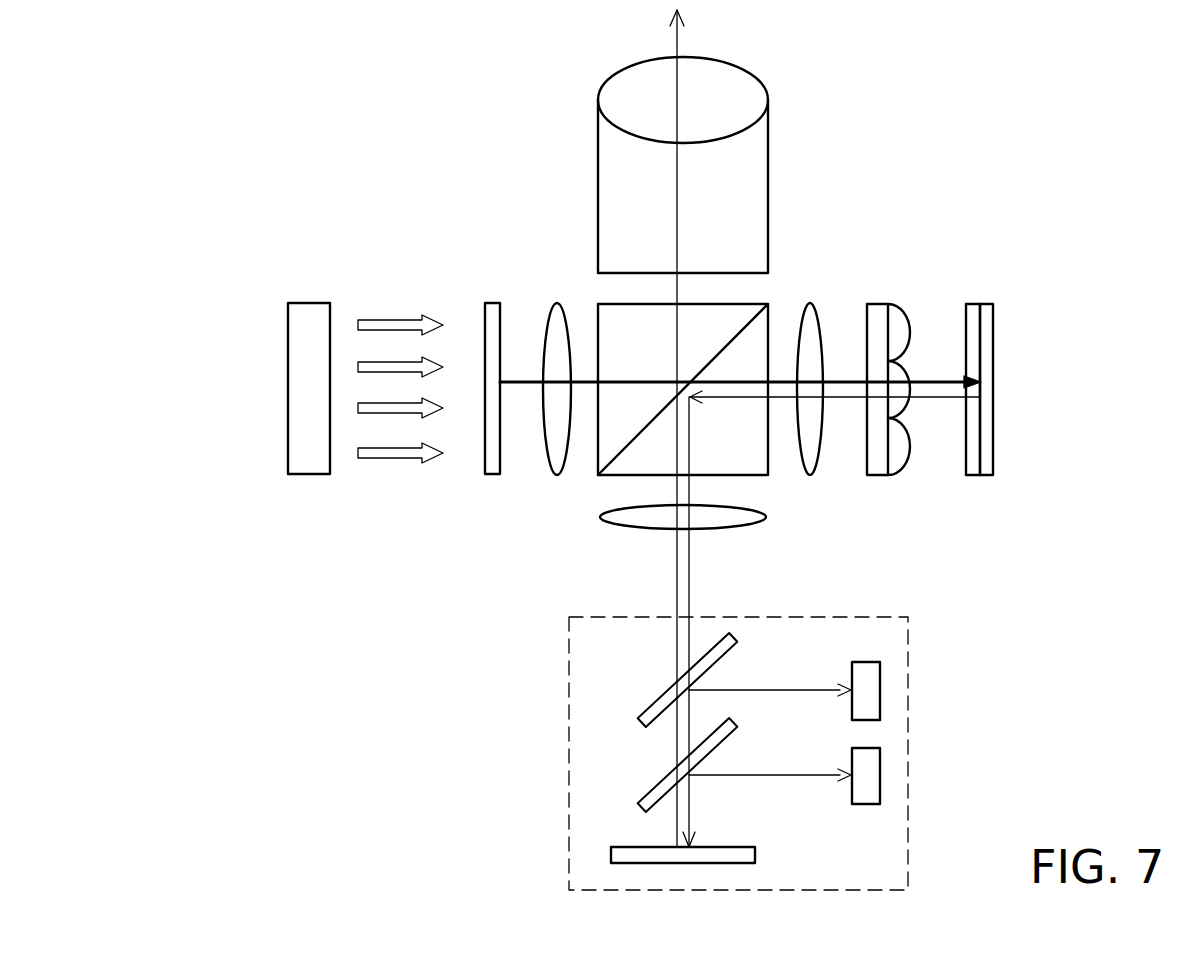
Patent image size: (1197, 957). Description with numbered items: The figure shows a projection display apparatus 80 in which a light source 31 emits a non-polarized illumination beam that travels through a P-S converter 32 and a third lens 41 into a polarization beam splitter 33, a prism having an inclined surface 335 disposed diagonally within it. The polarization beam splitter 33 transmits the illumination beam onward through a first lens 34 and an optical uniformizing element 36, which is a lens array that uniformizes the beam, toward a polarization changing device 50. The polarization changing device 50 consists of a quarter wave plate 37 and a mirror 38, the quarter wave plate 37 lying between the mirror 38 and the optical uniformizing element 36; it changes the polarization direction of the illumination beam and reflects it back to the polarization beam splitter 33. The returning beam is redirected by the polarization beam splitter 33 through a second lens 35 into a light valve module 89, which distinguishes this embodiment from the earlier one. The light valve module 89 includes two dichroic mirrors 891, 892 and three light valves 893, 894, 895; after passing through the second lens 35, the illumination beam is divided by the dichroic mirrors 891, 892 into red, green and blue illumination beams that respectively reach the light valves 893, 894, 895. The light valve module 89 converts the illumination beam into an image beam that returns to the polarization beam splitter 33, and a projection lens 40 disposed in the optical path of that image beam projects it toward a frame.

The projection display apparatus 80 is at (332, 99).
The projection lens 40 is at (726, 59).
The inclined surface 335 is at (753, 314).
The light source 31 is at (308, 474).
The P-S converter 32 is at (492, 474).
The third lens 41 is at (556, 475).
The polarization beam splitter 33 is at (598, 468).
The second lens 35 is at (656, 535).
The first lens 34 is at (810, 475).
The optical uniformizing element 36 is at (877, 475).
The quarter wave plate 37 is at (971, 475).
The mirror 38 is at (988, 475).
The polarization changing device 50 is at (950, 564).
The light valve module 89 is at (569, 818).
The dichroic mirror 891 is at (666, 696).
The dichroic mirror 892 is at (666, 781).
The light valve 893 is at (881, 690).
The light valve 894 is at (881, 775).
The light valve 895 is at (755, 855).